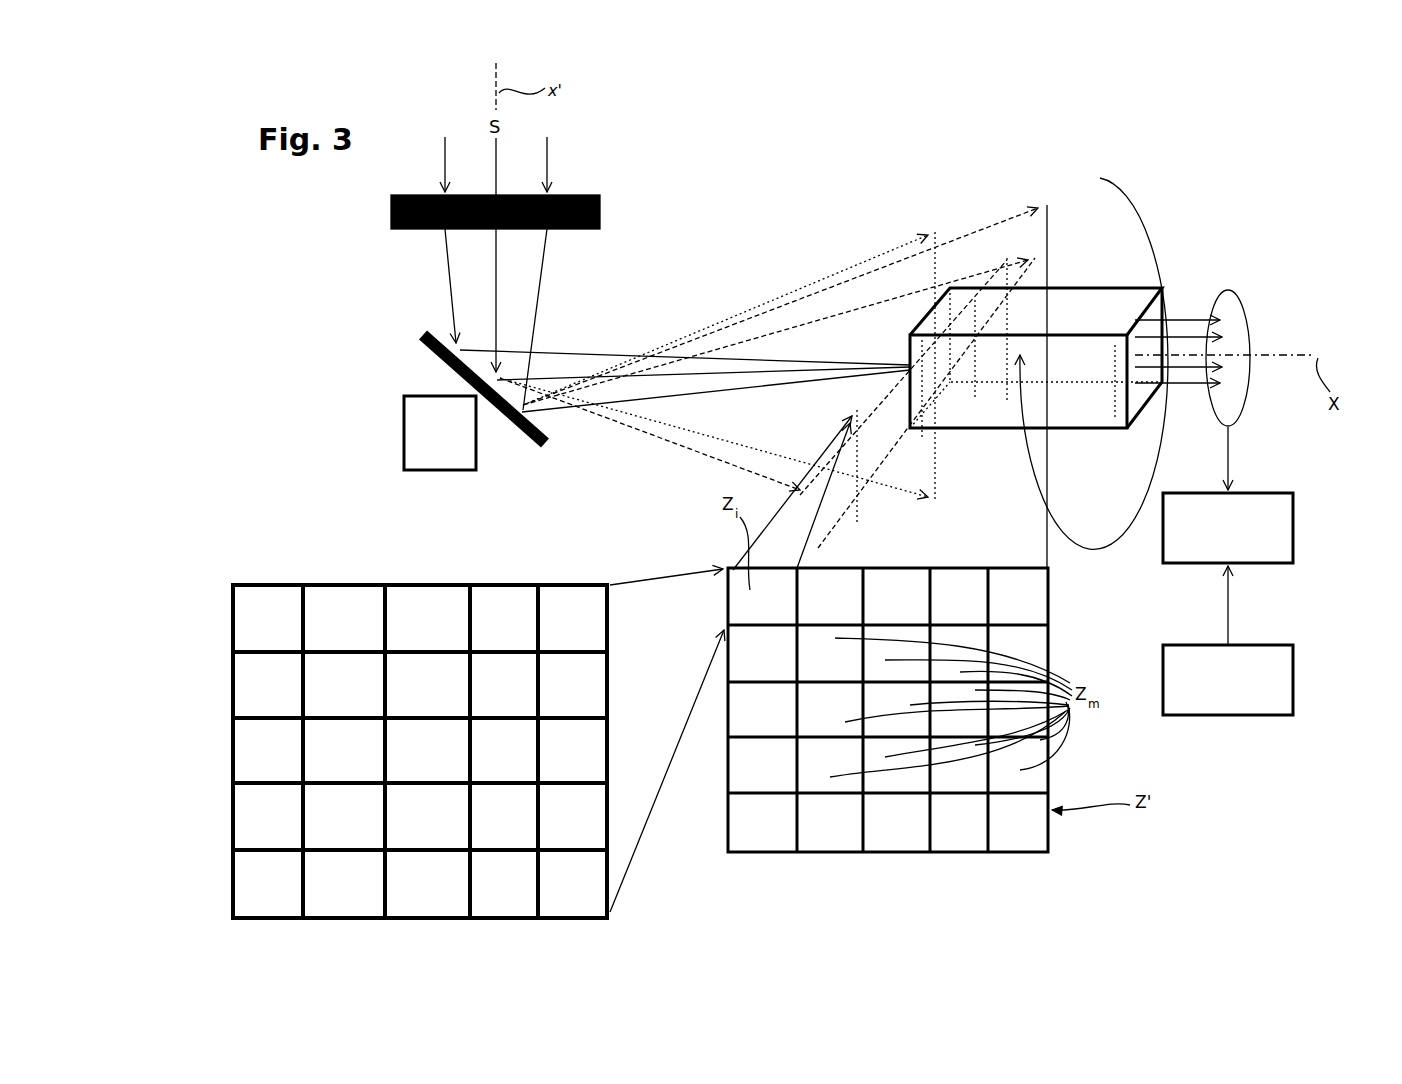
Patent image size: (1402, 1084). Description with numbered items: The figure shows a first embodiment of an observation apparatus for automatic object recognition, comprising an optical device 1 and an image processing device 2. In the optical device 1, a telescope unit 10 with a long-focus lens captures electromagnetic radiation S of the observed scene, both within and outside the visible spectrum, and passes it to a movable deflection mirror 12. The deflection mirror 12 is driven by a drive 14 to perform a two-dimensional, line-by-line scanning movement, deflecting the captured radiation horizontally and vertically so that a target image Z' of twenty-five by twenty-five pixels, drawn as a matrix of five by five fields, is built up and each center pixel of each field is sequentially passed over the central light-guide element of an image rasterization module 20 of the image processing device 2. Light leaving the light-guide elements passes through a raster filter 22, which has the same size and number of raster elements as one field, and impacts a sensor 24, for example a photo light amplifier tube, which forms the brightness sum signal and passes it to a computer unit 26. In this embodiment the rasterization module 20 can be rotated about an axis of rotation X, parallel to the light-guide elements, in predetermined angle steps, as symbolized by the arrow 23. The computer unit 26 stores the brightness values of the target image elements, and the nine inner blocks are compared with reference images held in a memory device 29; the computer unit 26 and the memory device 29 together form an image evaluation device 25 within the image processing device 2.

The optical device 1 is at (418, 498).
The image processing device 2 is at (1071, 216).
The telescope unit 10 is at (384, 215).
The deflection mirror 12 is at (432, 331).
The drive 14 is at (405, 415).
The image rasterization module 20 is at (982, 432).
The raster filter 22 is at (1135, 315).
The arrow 23 is at (1148, 213).
The sensor 24 is at (1252, 312).
The image evaluation device 25 is at (1303, 569).
The computer unit 26 is at (1295, 518).
The memory device 29 is at (1295, 680).